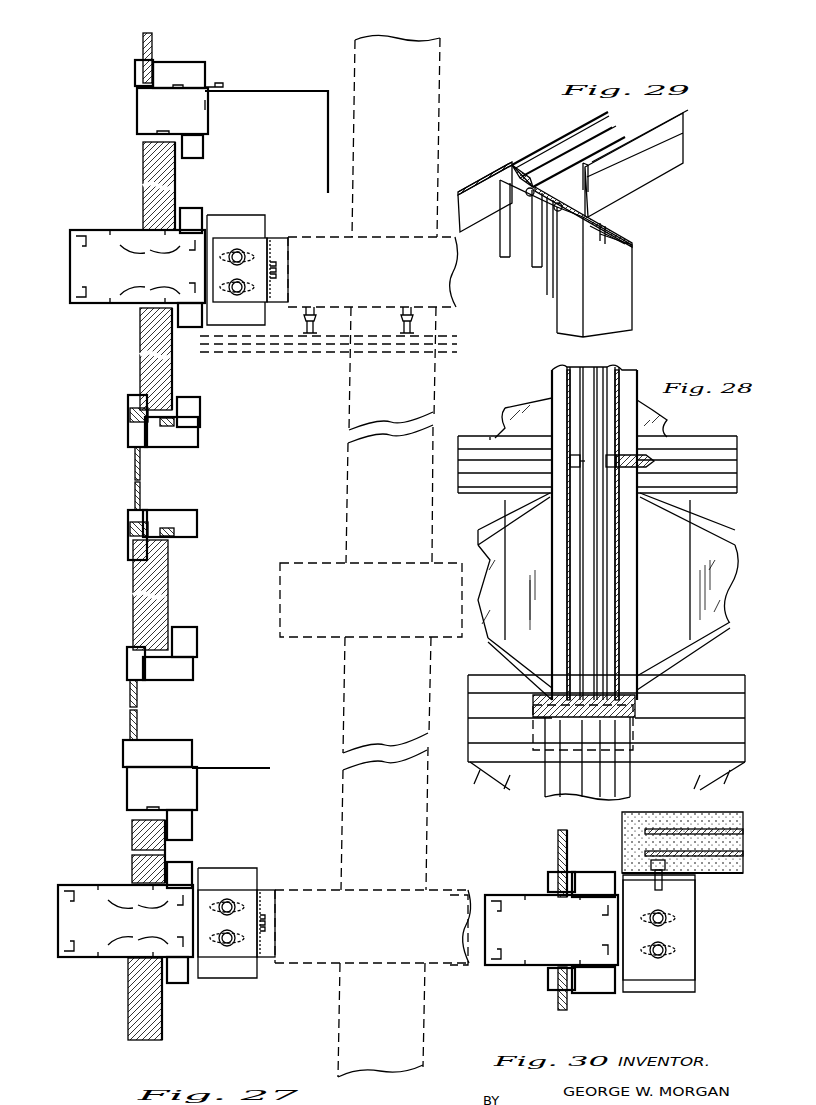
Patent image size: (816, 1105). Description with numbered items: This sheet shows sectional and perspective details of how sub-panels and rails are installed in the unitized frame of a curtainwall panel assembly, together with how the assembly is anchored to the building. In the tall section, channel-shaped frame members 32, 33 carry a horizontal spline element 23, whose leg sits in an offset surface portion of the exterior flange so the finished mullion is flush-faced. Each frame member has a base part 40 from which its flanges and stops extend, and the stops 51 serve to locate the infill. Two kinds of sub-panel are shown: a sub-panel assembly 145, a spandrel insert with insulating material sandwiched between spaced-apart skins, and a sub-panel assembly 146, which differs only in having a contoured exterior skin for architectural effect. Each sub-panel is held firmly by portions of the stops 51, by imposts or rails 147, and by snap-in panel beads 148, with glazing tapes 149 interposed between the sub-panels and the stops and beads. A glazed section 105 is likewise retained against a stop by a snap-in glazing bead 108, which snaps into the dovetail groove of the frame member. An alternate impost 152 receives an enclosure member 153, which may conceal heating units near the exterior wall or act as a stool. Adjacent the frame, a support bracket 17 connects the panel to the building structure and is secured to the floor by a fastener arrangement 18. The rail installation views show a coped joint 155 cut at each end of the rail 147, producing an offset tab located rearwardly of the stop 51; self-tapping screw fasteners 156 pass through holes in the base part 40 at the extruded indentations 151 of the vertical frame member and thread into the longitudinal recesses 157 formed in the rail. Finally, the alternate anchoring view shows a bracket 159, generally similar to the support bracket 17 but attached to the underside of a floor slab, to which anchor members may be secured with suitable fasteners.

In FIG. 27, the support bracket 17 is at (284, 238).
In FIG. 27, the fastener arrangement 18 is at (272, 238).
In FIG. 30, the fastener arrangement 18 is at (662, 880).
In FIG. 27, the horizontal spline element 23 is at (70, 279).
In FIG. 30, the horizontal spline element 23 is at (485, 942).
In FIG. 27, the frame member 32 is at (86, 230).
In FIG. 30, the frame member 32 is at (512, 894).
In FIG. 27, the frame member 33 is at (90, 303).
In FIG. 30, the frame member 33 is at (512, 966).
In FIG. 29, the base part 40 is at (560, 322).
In FIG. 28, the stop 51 is at (632, 380).
In FIG. 27, the glazed section 105 is at (135, 470).
In FIG. 30, the glazed section 105 is at (558, 850).
In FIG. 27, the snap-in glazing bead 108 is at (190, 63).
In FIG. 30, the snap-in glazing bead 108 is at (600, 872).
In FIG. 27, the sub-panel assembly 145 is at (143, 173).
In FIG. 27, the sub-panel assembly 146 is at (133, 585).
In FIG. 28, the sub-panel assembly 146 is at (687, 600).
In FIG. 27, the impost (rail) 147 is at (128, 425).
In FIG. 29, the impost (rail) 147 is at (675, 183).
In FIG. 28, the impost (rail) 147 is at (740, 455).
In FIG. 30, the impost (rail) 147 is at (561, 931).
In FIG. 27, the snap-in panel bead 148 is at (204, 151).
In FIG. 27, the glazing tape 149 is at (175, 168).
In FIG. 30, the glazing tape 149 is at (569, 872).
In FIG. 27, the extruded indentation 151 is at (165, 296).
In FIG. 29, the extruded indentation 151 is at (532, 202).
In FIG. 27, the impost 152 is at (137, 113).
In FIG. 27, the enclosure member 153 is at (265, 93).
In FIG. 29, the coped joint 155 is at (588, 176).
In FIG. 28, the coped joint 155 is at (655, 438).
In FIG. 29, the screw fastener 156 is at (528, 192).
In FIG. 28, the screw fastener 156 is at (570, 457).
In FIG. 27, the longitudinal recess 157 is at (130, 412).
In FIG. 29, the longitudinal recess 157 is at (565, 164).
In FIG. 28, the longitudinal recess 157 is at (653, 461).
In FIG. 30, the support bracket 159 is at (695, 959).